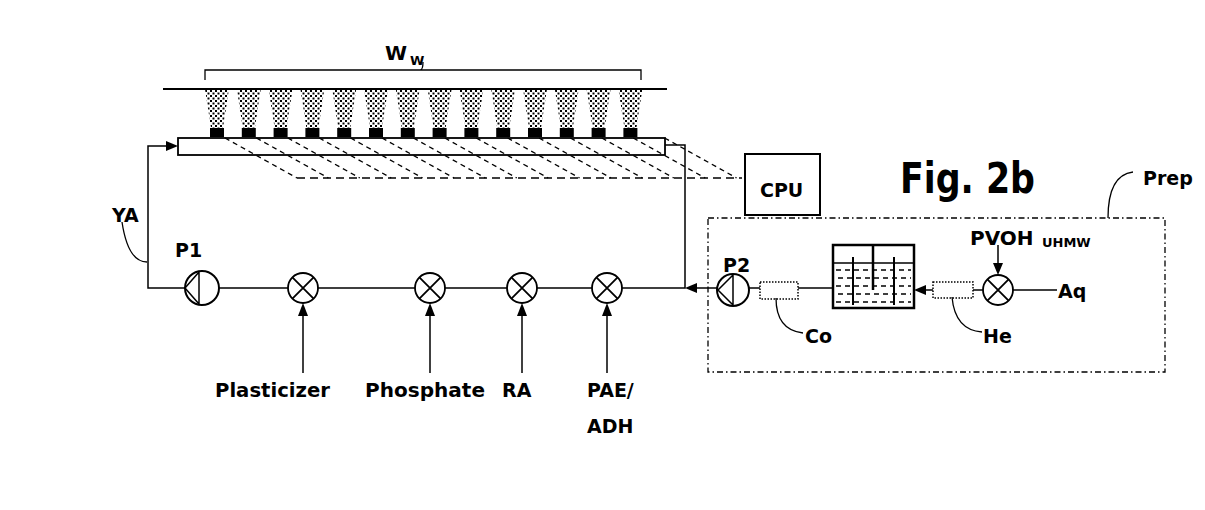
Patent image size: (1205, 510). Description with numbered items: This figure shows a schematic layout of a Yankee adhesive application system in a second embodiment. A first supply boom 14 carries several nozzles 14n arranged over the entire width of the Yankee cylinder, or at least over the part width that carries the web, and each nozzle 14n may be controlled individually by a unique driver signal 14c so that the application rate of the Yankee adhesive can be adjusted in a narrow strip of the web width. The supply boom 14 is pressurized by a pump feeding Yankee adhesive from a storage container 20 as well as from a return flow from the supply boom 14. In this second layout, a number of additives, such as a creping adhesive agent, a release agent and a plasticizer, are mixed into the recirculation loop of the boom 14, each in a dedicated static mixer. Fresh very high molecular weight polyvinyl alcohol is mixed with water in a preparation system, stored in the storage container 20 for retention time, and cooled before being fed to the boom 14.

The supply boom 14 is at (198, 148).
The nozzles 14n is at (640, 133).
The driver signal 14c is at (693, 170).
The storage container 20 is at (885, 308).